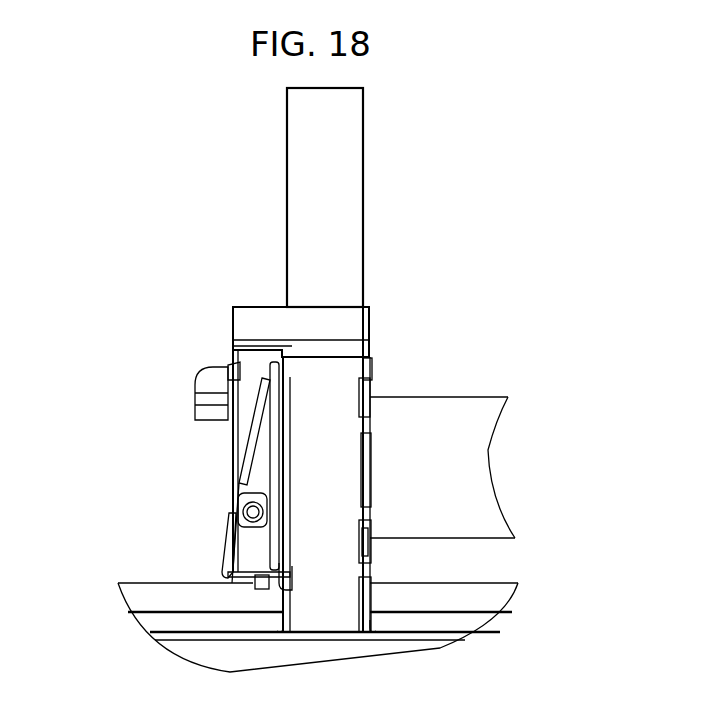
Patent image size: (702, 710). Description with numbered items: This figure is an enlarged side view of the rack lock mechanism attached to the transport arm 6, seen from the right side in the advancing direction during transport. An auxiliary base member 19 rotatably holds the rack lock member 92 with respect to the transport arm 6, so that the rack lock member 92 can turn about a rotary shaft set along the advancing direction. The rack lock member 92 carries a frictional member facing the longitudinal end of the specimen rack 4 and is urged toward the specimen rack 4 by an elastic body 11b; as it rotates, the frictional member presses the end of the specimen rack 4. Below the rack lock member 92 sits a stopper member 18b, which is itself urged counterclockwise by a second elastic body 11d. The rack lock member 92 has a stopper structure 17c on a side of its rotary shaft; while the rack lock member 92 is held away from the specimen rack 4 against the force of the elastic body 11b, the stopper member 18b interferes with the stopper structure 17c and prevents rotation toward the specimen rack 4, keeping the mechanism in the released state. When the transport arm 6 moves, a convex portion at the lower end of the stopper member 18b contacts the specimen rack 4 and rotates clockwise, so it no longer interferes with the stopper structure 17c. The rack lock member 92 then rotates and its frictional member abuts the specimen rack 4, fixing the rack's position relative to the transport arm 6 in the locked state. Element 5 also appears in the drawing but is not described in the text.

The column 5 is at (352, 201).
The rack lock member 92 is at (247, 320).
The specimen rack 4 is at (350, 423).
The transport arm 6 is at (473, 403).
The elastic body 11b is at (227, 357).
The stopper structure 17c is at (226, 372).
The auxiliary base member 19 is at (203, 385).
The stopper member 18b is at (232, 463).
The elastic body 11d is at (233, 518).